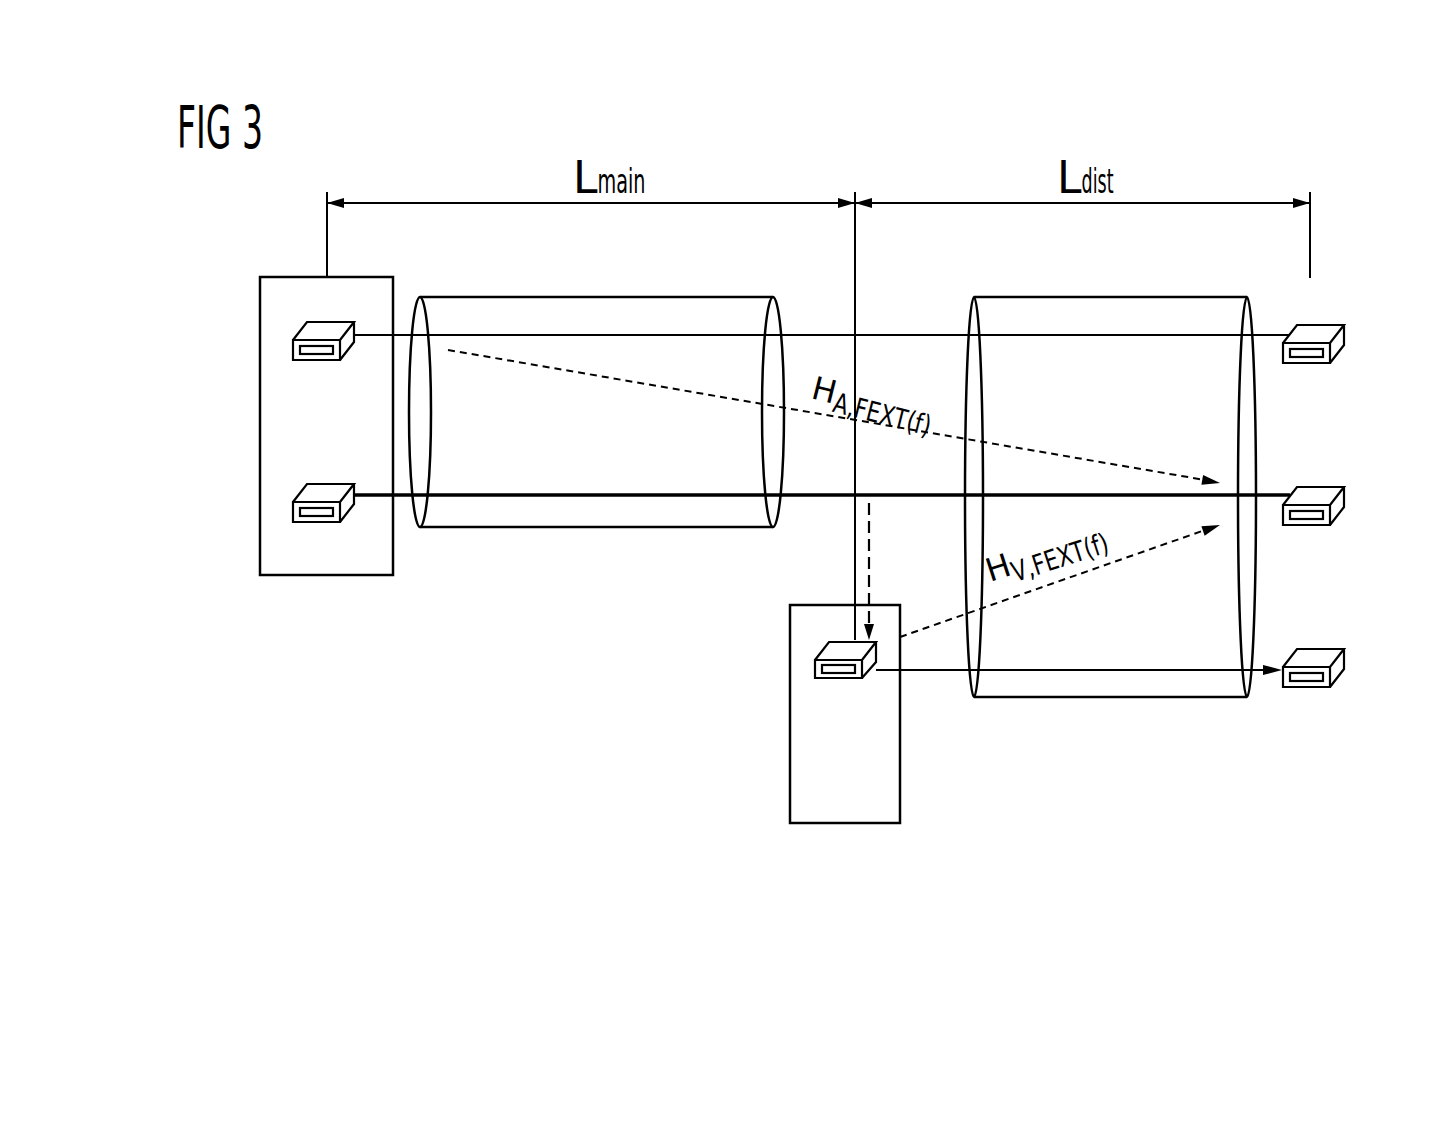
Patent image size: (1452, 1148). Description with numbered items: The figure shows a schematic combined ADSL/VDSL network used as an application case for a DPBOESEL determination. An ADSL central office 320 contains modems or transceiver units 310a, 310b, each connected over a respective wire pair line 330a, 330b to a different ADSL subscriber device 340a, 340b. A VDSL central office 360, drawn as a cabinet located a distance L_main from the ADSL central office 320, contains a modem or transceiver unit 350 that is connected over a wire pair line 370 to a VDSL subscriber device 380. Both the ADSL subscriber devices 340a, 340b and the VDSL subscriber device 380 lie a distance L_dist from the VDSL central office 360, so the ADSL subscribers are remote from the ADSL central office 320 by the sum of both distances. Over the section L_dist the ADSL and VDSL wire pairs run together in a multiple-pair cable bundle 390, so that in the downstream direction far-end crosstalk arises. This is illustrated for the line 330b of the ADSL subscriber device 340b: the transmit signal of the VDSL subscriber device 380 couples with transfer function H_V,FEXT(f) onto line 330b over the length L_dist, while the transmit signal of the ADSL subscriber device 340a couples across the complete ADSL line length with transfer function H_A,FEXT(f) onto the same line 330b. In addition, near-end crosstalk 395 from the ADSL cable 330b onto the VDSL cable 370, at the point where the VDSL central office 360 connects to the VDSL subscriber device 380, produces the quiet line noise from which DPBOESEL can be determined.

The modem or transceiver unit 310a is at (293, 352).
The modem or transceiver unit 310b is at (293, 512).
The ADSL central office 320 is at (260, 410).
The wire pair line 330a is at (890, 333).
The wire pair line 330b is at (805, 493).
The ADSL subscriber device 340a is at (1344, 345).
The ADSL subscriber device 340b is at (1344, 507).
The modem or transceiver unit 350 is at (815, 668).
The VDSL central office 360 is at (848, 823).
The wire pair line 370 is at (1157, 668).
The VDSL subscriber device 380 is at (1344, 670).
The multiple-pair cable bundle 390 is at (1068, 697).
The near-end crosstalk 395 is at (855, 556).